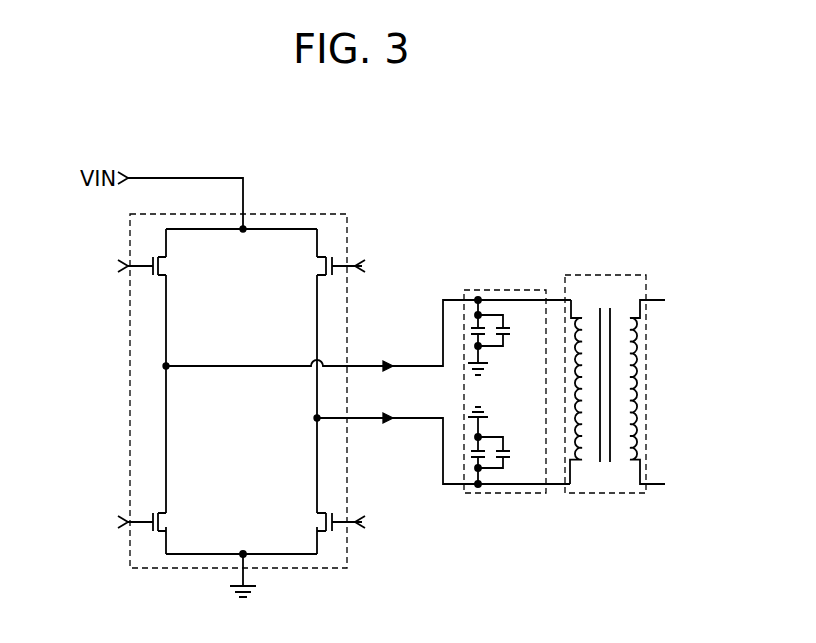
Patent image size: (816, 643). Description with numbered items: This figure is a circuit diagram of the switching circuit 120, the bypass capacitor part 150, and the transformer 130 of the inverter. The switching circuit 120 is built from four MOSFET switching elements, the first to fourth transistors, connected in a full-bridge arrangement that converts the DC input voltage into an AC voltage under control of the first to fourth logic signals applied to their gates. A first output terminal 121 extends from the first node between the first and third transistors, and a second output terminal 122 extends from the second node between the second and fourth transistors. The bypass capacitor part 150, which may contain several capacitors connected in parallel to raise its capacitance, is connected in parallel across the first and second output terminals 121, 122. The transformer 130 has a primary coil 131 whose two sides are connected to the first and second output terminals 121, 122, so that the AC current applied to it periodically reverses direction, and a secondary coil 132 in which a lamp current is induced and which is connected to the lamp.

The switching circuit 120 is at (310, 214).
The first output terminal 121 is at (366, 365).
The second output terminal 122 is at (366, 420).
The transformer 130 is at (608, 275).
The primary coil 131 is at (582, 464).
The secondary coil 132 is at (632, 464).
The bypass capacitor part 150 is at (503, 290).